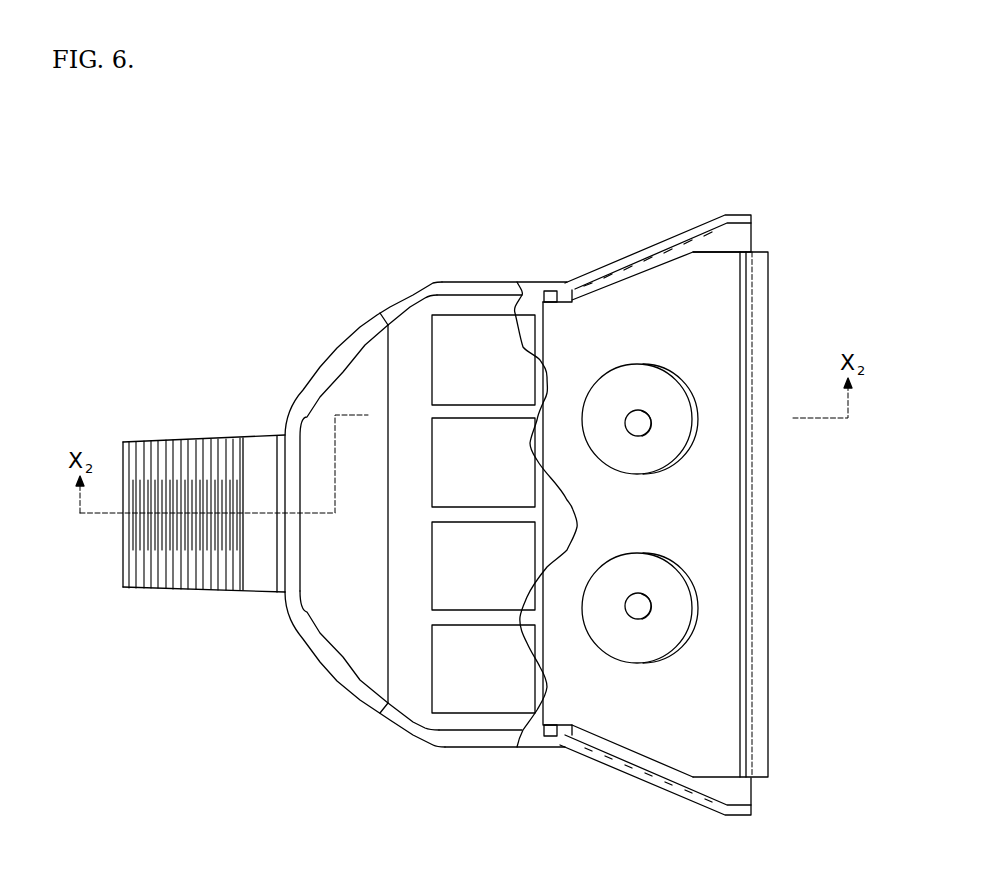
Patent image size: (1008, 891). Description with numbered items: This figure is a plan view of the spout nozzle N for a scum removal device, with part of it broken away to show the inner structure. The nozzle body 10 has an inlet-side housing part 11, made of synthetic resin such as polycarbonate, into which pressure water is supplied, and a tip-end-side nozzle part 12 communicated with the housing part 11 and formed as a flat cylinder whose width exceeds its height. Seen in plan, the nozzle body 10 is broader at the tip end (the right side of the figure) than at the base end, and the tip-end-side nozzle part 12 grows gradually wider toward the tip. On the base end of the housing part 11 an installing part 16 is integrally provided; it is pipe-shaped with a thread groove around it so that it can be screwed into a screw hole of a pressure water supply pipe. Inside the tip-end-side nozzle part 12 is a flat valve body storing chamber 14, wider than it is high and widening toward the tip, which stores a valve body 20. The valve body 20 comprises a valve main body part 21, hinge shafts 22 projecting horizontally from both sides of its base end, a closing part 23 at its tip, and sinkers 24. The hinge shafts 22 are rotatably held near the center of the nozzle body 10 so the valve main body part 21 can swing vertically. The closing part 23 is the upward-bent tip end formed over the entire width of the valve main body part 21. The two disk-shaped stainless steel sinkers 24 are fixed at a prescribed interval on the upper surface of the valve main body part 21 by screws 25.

The lamp unit N is at (588, 244).
The nozzle body 10 is at (343, 340).
The inlet-side housing part 11 is at (423, 289).
The tip-end-side nozzle part 12 is at (672, 246).
The valve body storing chamber 14 is at (731, 790).
The installing part 16 is at (183, 438).
The valve body 20 is at (767, 251).
The valve main body part 21 is at (666, 328).
The hinge shaft 22 is at (552, 290).
The closing part 23 is at (760, 732).
The sinker 24 is at (670, 450).
The screw 25 is at (652, 424).